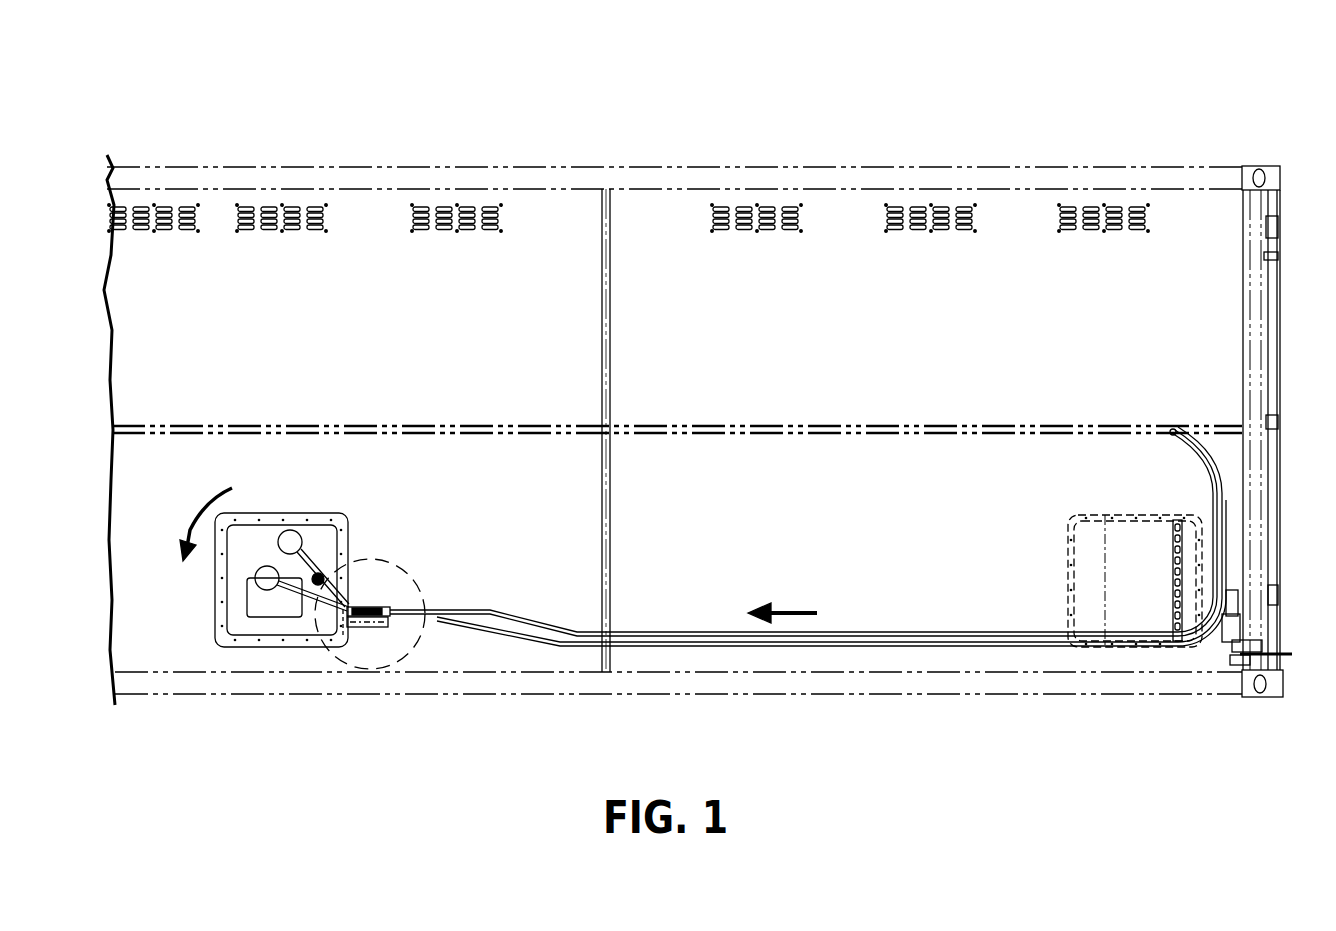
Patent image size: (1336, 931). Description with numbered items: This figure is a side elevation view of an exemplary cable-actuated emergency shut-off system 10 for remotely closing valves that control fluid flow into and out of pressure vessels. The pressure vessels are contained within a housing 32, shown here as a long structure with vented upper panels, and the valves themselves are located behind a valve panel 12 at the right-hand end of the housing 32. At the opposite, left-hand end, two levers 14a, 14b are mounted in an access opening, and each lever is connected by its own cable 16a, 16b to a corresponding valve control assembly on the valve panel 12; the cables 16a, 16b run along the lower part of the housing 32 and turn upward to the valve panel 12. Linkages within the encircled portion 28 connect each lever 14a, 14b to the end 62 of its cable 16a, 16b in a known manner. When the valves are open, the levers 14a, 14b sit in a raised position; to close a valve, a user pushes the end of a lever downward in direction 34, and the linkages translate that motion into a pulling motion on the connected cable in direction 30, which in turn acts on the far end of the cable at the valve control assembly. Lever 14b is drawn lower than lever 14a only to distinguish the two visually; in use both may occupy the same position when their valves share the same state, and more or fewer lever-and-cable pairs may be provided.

The cable-actuated emergency shut-off system 10 is at (674, 116).
The valve panel 12 is at (1280, 235).
The lever 14a is at (310, 555).
The lever 14b is at (277, 590).
The cable 16a is at (517, 598).
The cable 16b is at (503, 648).
The encircled portion 28 is at (420, 643).
The direction 30 is at (782, 608).
The housing 32 is at (891, 170).
The direction 34 is at (196, 514).
The end of cable 62 is at (400, 610).